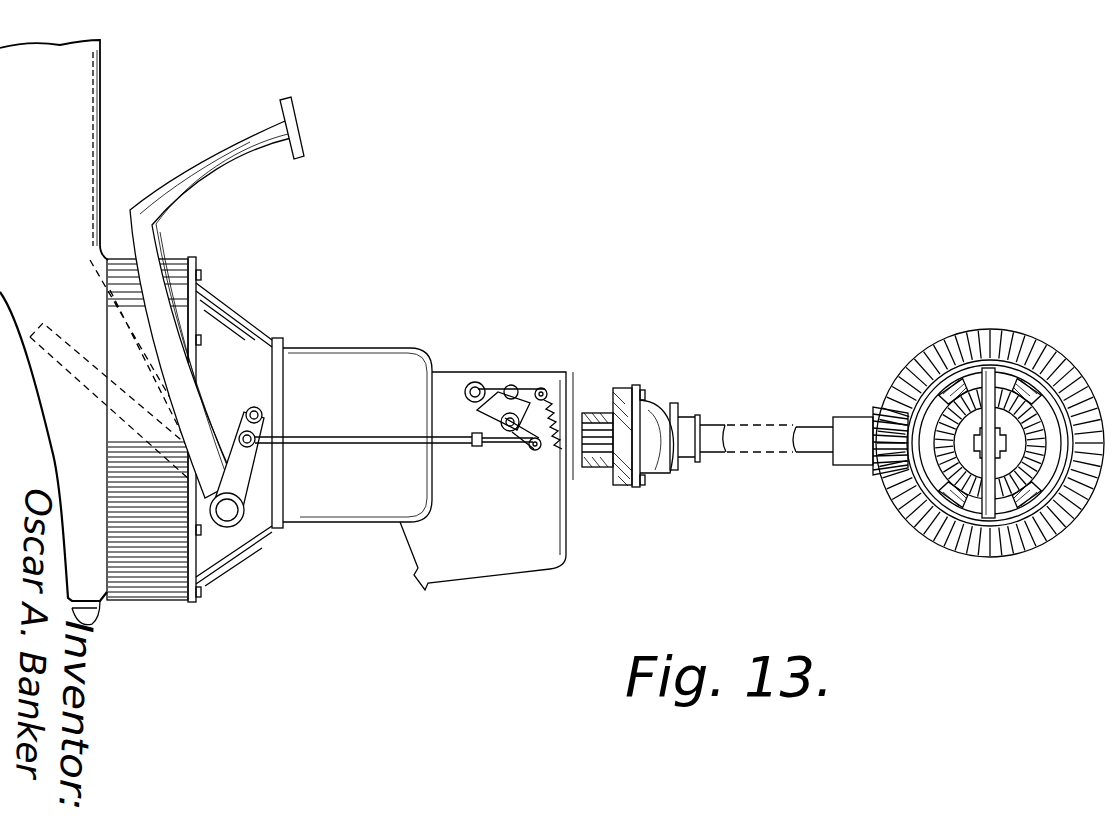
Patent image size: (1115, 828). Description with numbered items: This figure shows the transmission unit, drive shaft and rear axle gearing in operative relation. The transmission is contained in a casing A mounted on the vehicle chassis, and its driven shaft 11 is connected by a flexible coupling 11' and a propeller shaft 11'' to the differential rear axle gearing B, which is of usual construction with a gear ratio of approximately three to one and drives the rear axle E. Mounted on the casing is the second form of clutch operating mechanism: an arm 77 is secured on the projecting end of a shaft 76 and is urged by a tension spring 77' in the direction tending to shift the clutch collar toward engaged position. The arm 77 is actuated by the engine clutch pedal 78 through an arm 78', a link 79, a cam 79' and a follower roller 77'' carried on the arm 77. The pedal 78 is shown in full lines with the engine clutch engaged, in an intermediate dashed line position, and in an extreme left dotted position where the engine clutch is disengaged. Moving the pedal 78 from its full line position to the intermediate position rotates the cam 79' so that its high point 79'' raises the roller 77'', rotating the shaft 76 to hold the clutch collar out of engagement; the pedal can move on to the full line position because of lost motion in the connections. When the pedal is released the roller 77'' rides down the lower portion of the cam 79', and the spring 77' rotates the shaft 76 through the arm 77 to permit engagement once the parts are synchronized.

The engine clutch pedal 78 is at (163, 297).
The arm 78' is at (273, 486).
The link 79 is at (394, 458).
The cam 79' is at (514, 462).
The high point of cam 79'' is at (509, 348).
The shaft 76 is at (475, 382).
The arm 77 is at (533, 362).
The tension spring 77' is at (593, 377).
The follower pin (roller) 77'' is at (526, 351).
The driven shaft 11 is at (608, 464).
The flexible coupling 11' is at (712, 416).
The propeller shaft 11'' is at (850, 425).
The casing A is at (428, 469).
The differential rear axle gearing B is at (905, 547).
The rear axle E is at (1005, 435).